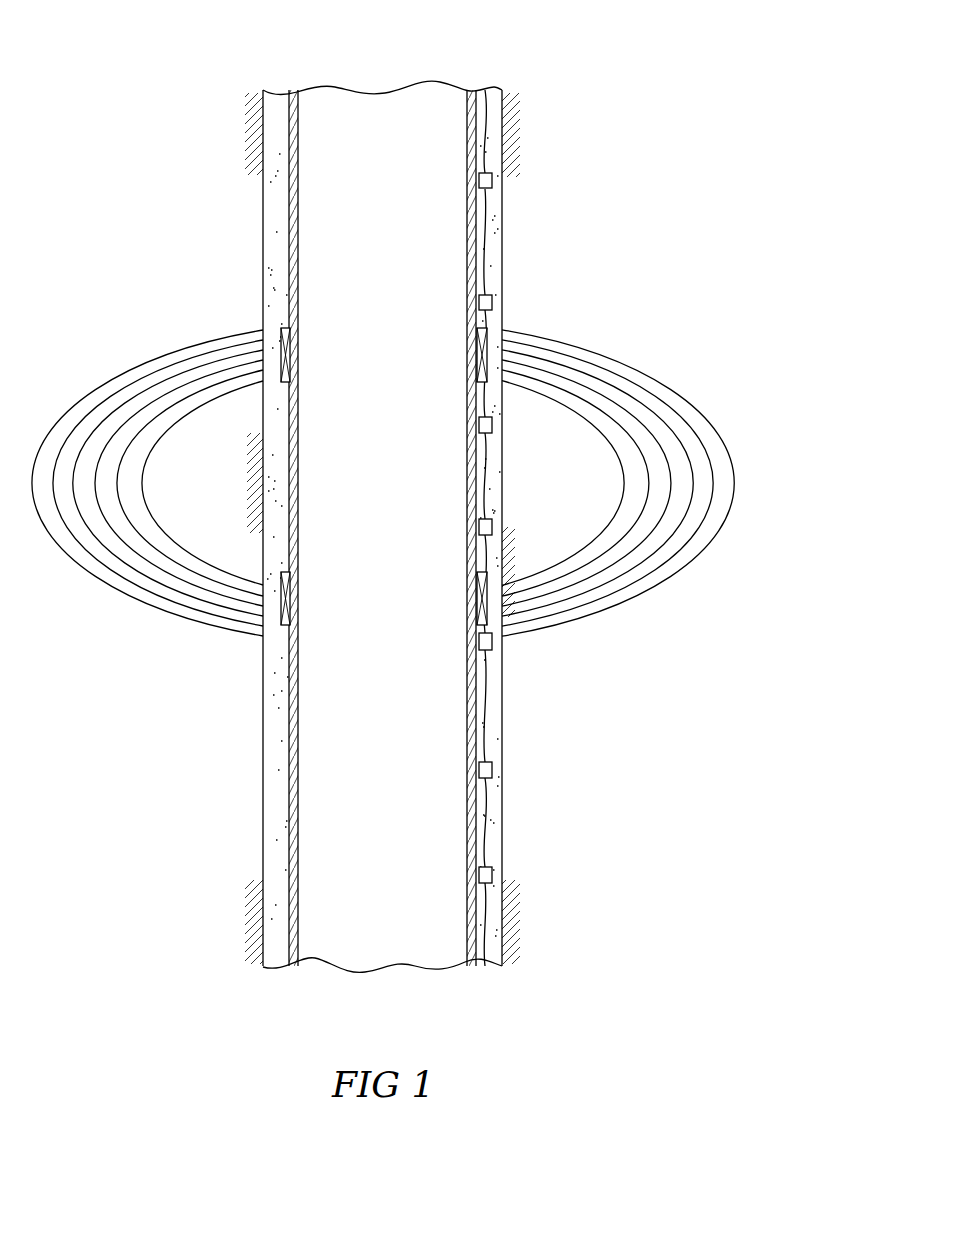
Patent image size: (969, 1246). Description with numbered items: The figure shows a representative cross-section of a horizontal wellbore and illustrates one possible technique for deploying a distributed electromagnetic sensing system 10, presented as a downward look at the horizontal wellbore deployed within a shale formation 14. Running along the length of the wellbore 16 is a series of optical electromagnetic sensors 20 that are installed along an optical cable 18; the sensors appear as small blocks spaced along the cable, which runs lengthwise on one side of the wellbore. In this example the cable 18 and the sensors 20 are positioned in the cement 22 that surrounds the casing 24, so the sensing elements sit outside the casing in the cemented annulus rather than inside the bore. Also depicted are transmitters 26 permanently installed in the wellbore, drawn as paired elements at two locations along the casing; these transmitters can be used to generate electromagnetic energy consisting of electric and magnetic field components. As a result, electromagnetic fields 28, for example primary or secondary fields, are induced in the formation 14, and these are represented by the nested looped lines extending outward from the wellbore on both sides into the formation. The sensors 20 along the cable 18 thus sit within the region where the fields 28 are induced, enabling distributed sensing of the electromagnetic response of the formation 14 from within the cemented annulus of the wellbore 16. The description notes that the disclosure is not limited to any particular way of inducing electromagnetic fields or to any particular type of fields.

The system 10 is at (383, 496).
The shale formation 14 is at (153, 762).
The wellbore 16 is at (282, 668).
The optical cable 18 is at (487, 241).
The optical electromagnetic sensors 20 is at (493, 182).
The cement 22 is at (262, 226).
The casing 24 is at (289, 253).
The transmitters 26 is at (283, 330).
The electromagnetic fields 28 is at (152, 358).